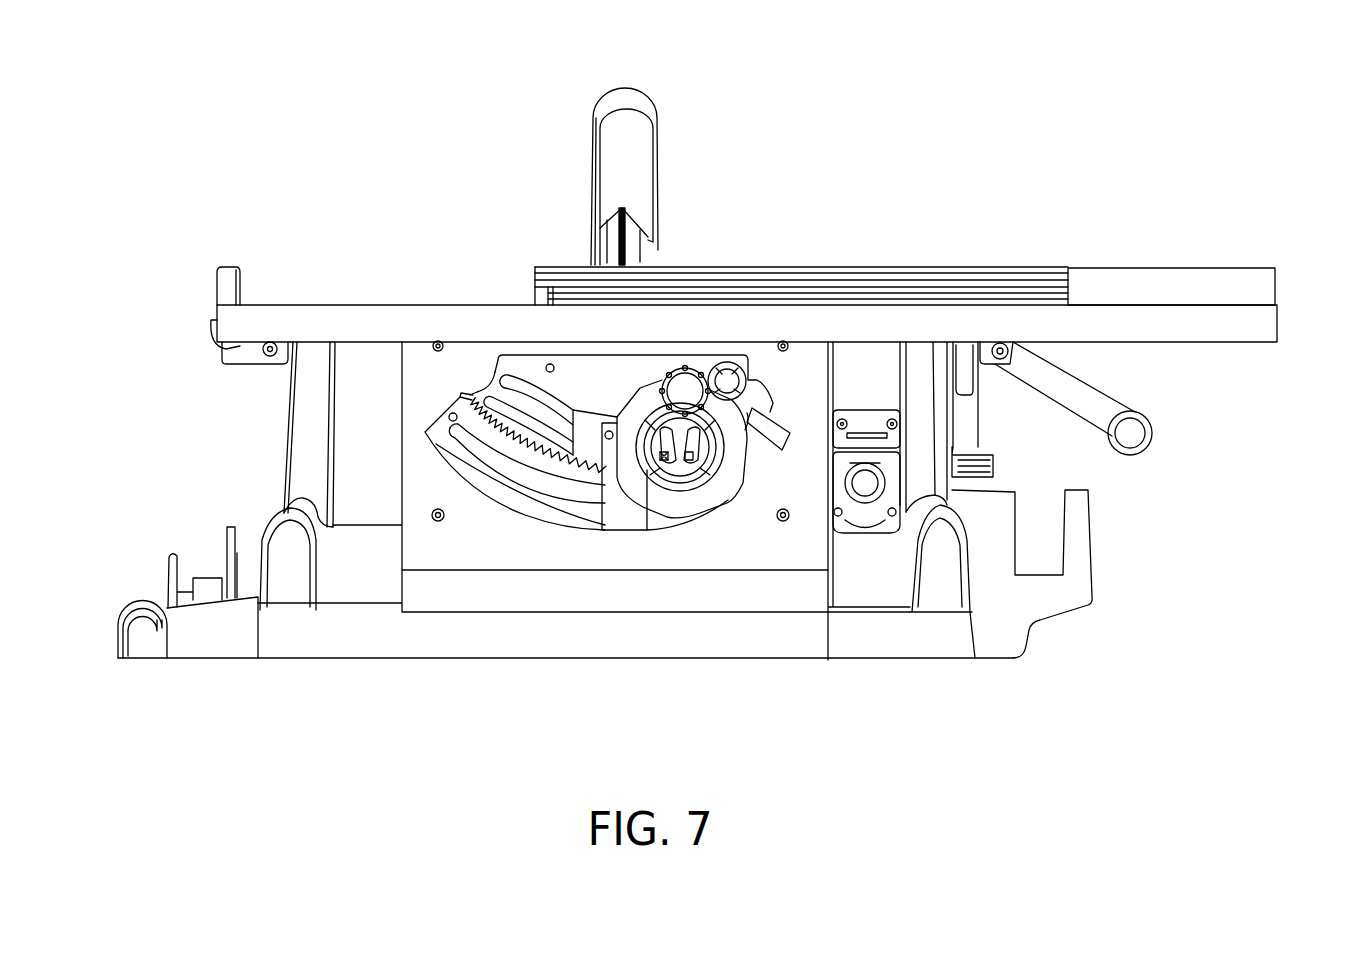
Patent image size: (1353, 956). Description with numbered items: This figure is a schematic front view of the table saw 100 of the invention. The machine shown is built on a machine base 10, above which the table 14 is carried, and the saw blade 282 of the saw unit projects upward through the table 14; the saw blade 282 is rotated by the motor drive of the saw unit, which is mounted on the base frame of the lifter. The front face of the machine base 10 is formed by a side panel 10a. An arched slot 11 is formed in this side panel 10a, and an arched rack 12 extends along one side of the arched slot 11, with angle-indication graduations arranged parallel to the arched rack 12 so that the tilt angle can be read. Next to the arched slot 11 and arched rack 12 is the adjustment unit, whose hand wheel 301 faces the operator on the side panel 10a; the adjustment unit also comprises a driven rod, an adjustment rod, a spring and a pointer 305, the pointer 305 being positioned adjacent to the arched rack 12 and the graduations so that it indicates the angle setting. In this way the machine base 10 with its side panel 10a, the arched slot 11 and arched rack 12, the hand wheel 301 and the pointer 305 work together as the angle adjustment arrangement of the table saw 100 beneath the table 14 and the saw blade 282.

The table saw 100 is at (1013, 151).
The machine base 10 is at (285, 438).
The side panel 10a is at (517, 358).
The arched slot 11 is at (538, 437).
The arched rack 12 is at (496, 429).
The table 14 is at (877, 265).
The saw blade 282 is at (627, 230).
The hand wheel 301 is at (693, 500).
The pointer 305 is at (622, 518).